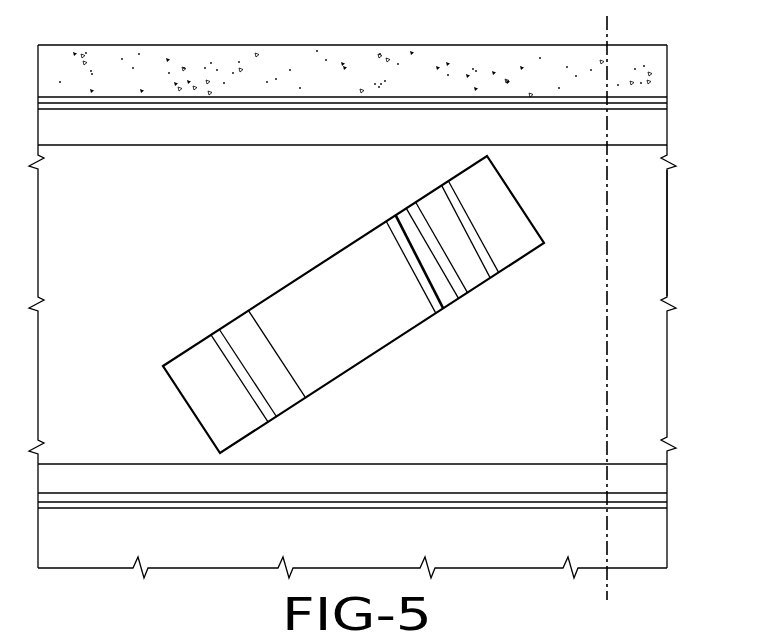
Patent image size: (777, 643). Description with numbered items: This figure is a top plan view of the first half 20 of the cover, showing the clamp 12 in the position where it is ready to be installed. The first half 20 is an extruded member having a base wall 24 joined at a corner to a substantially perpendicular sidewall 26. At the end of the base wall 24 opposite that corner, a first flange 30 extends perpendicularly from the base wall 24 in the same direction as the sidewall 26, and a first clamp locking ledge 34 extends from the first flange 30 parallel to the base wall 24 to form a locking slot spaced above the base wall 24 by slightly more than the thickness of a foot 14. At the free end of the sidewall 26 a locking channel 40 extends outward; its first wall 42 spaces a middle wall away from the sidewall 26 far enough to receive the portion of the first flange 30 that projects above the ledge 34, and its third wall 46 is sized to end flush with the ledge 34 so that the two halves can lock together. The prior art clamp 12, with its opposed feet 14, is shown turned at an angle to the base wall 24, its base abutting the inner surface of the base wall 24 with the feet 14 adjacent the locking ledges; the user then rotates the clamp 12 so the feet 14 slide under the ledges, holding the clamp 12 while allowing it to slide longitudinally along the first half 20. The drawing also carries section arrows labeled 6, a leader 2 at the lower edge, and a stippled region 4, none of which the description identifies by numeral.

The pavement structure 2 is at (209, 560).
The concrete layer 4 is at (660, 70).
The section line 6- 6 is at (607, 16).
The clamp 12 is at (376, 363).
The feet 14 is at (508, 207).
The first half 20 is at (666, 211).
The base wall 24 is at (643, 262).
The sidewall 26 is at (131, 510).
The first flange 30 is at (128, 112).
The first clamp locking ledge 34 is at (208, 132).
The locking channel 40 is at (96, 476).
The first wall 42 is at (302, 500).
The third wall 46 is at (146, 478).